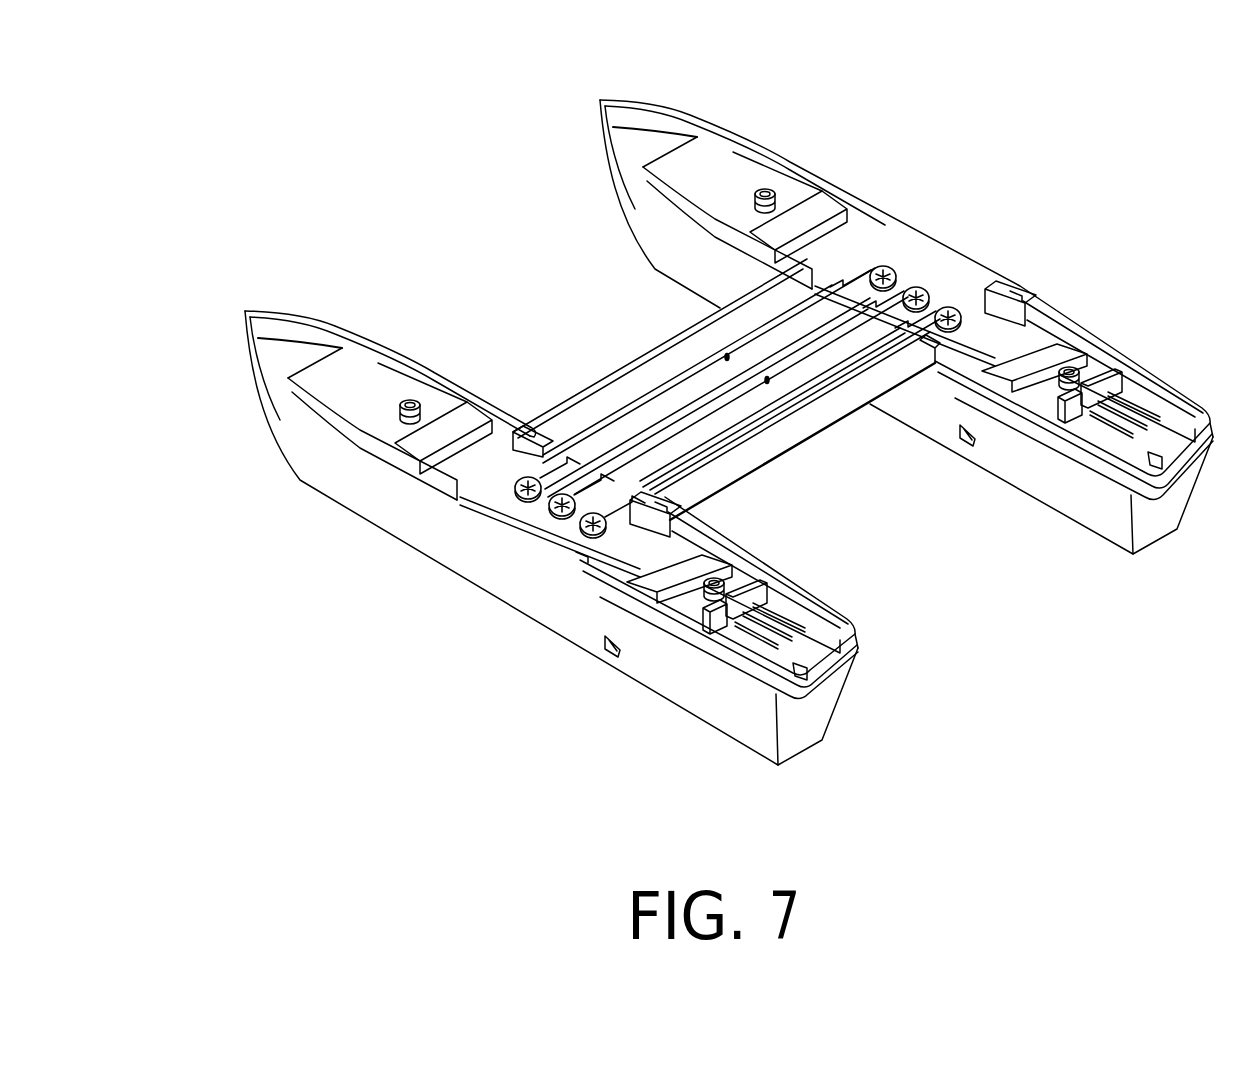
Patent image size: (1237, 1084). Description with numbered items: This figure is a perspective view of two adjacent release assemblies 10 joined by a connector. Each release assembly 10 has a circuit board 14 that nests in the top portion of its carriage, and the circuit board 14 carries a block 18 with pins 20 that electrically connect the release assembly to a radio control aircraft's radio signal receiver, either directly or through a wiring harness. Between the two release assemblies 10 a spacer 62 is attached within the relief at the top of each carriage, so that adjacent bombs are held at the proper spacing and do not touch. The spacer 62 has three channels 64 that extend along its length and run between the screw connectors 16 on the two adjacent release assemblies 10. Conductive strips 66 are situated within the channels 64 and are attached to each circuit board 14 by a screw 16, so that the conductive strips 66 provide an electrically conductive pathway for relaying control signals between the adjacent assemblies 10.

The release assembly 10 is at (643, 217).
The circuit board 14 is at (1000, 345).
The screw connector 16 is at (951, 311).
The block 18 is at (720, 623).
The pins 20 is at (806, 664).
The spacer 62 is at (667, 360).
The channels 64 is at (767, 380).
The conductive strips 66 is at (595, 515).